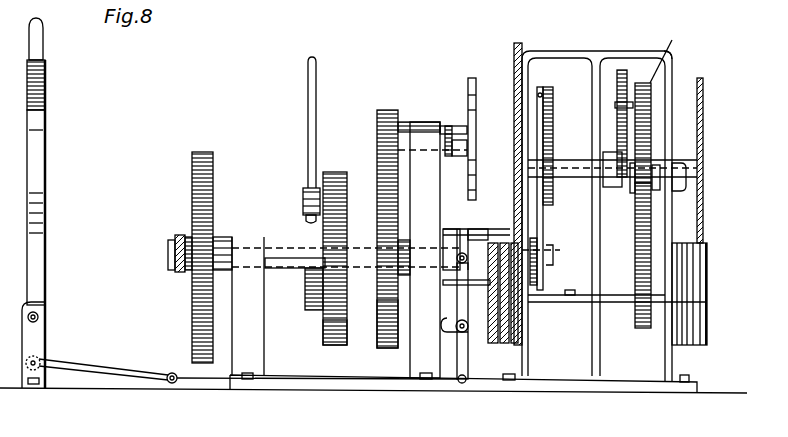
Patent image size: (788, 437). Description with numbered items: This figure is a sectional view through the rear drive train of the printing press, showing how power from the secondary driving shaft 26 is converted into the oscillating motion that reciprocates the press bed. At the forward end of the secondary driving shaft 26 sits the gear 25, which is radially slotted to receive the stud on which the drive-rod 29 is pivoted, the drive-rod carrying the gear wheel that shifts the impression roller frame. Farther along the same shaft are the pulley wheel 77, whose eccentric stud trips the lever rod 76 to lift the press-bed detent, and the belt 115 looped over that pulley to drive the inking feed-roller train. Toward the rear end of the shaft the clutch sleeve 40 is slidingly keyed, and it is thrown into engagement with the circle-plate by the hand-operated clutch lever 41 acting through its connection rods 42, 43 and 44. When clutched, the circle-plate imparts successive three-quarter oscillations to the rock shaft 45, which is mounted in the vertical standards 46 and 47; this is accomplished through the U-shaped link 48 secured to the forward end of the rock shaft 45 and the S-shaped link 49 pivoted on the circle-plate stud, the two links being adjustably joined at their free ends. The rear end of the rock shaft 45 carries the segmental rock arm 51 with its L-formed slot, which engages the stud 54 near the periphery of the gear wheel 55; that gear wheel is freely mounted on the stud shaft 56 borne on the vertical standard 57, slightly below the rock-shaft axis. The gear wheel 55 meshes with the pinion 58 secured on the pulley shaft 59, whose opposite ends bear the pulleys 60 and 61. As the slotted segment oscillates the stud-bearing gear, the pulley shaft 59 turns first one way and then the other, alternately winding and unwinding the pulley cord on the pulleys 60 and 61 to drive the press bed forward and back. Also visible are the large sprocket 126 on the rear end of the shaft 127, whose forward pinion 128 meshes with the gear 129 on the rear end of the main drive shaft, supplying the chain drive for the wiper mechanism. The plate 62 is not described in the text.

The hand-operated clutch lever 41 is at (44, 62).
The connection rod 42 is at (97, 368).
The connection rod 43 is at (330, 382).
The gear 25 is at (200, 152).
The drive-rod 29 is at (170, 257).
The secondary driving shaft 26 is at (288, 269).
The belt 115 is at (323, 345).
The pulley wheel 77 is at (345, 230).
The lever rod 76 is at (312, 86).
The pinion 128 is at (385, 110).
The gear 129 is at (377, 332).
The shaft 127 is at (448, 123).
The large sprocket 126 is at (473, 78).
The clutch sleeve 40 is at (473, 232).
The pulley 60 is at (510, 345).
The connection rod 44 is at (467, 350).
The side plate 62 is at (518, 43).
The vertical standard 46 is at (533, 72).
The vertical standard 47 is at (595, 330).
The pulley shaft 59 is at (569, 302).
The rock shaft 45 is at (567, 160).
The stud shaft 56 is at (686, 178).
The U-shaped link 48 is at (553, 199).
The S-shaped link 49 is at (548, 228).
The stud 54 is at (616, 100).
The segmental rock arm 51 is at (626, 70).
The pinion 58 is at (643, 330).
The gear wheel 55 is at (672, 49).
The vertical standard 57 is at (675, 68).
The pulley 61 is at (697, 344).